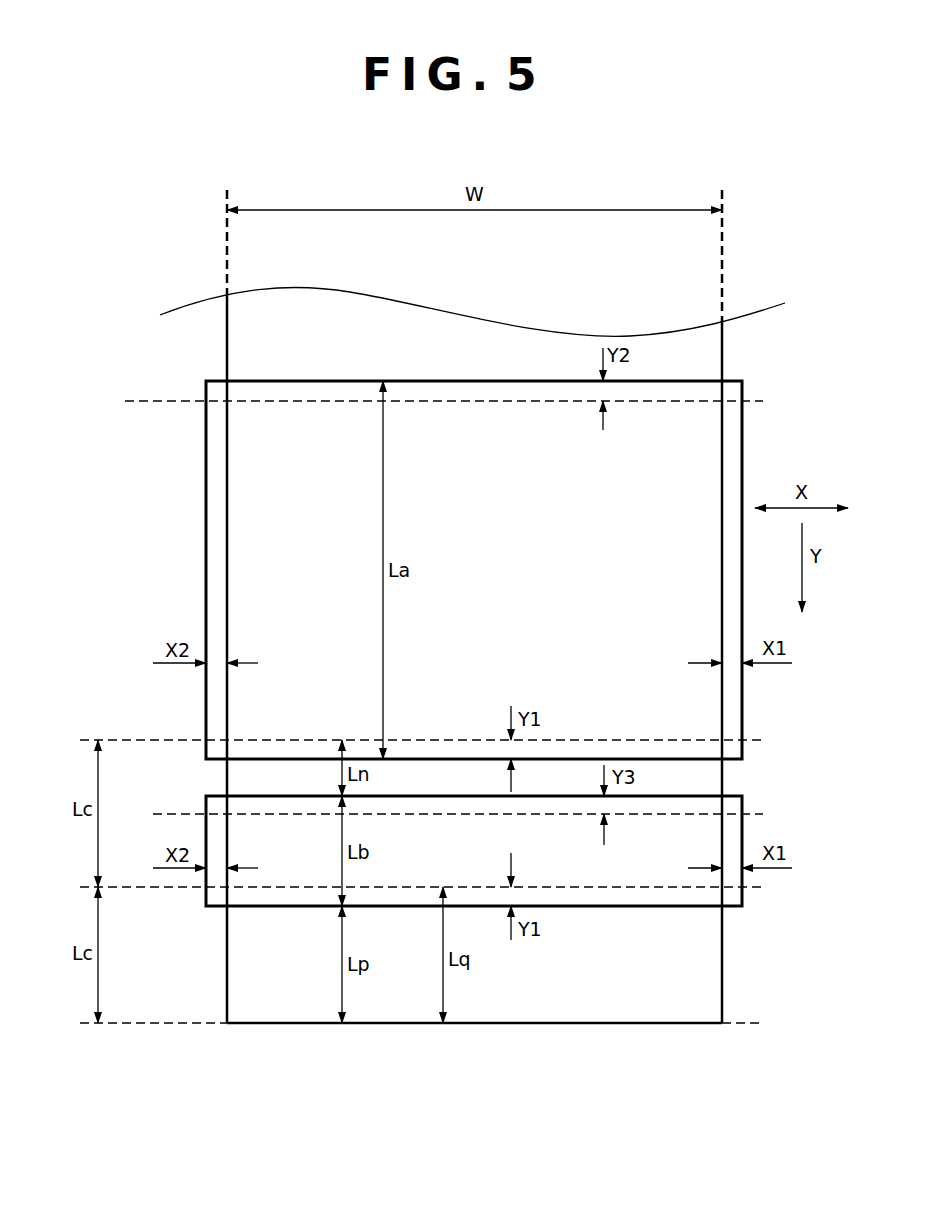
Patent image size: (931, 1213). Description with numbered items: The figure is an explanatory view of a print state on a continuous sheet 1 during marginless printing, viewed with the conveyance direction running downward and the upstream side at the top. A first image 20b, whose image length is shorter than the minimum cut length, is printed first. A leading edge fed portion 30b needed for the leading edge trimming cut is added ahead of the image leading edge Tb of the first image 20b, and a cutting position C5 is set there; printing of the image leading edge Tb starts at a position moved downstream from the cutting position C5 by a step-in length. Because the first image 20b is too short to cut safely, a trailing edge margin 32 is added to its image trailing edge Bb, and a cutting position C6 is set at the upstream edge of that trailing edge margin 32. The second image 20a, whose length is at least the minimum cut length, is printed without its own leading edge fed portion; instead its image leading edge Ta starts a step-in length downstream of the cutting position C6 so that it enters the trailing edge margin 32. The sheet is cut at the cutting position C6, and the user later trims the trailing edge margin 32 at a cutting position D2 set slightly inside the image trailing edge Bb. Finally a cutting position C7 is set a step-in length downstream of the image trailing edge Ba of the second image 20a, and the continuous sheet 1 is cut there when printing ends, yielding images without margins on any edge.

The continuous sheet 1 is at (445, 330).
The second image 20a is at (685, 432).
The first image 20b is at (702, 825).
The leading edge fed portion 30b is at (702, 972).
The trailing edge margin 32 is at (702, 775).
The image trailing edge Ba is at (285, 381).
The image leading edge Ta is at (270, 758).
The image trailing edge Bb is at (268, 796).
The image leading edge Tb is at (274, 906).
The cutting position C7 is at (426, 401).
The cutting position C6 is at (421, 741).
The cutting position D2 is at (440, 815).
The cutting position C5 is at (421, 888).